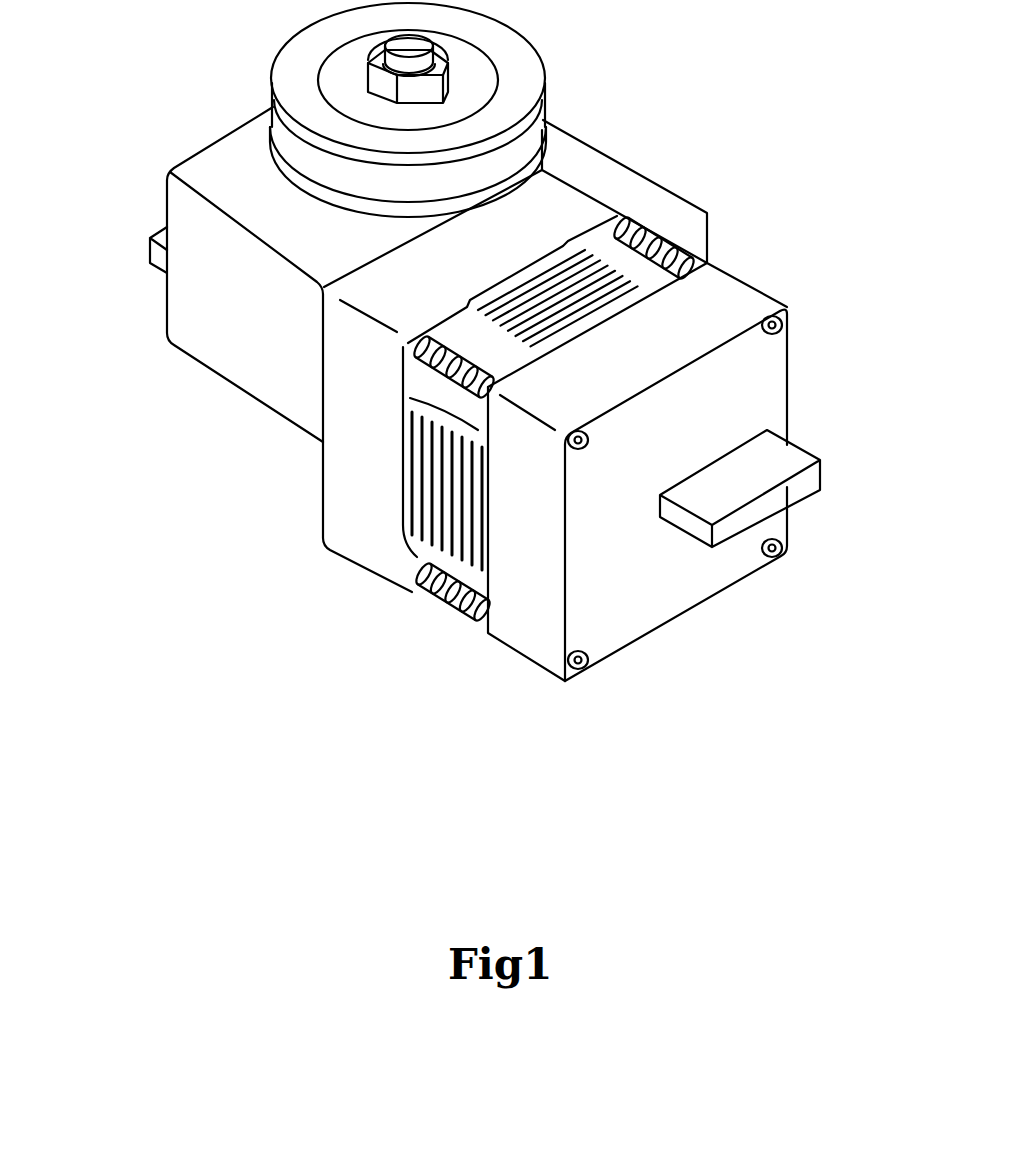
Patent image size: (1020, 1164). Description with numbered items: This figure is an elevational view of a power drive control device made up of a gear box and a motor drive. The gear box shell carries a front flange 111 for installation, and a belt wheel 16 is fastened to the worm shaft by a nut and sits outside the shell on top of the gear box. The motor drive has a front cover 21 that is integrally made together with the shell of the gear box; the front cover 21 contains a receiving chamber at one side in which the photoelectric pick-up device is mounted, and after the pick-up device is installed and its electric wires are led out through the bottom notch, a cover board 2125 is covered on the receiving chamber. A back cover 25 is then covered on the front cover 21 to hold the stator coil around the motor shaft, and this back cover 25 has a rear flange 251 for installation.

The belt wheel 16 is at (533, 64).
The front flange 111 is at (167, 252).
The front cover 21 is at (357, 538).
The cover board 2125 is at (693, 248).
The back cover 25 is at (733, 300).
The rear flange 251 is at (812, 470).